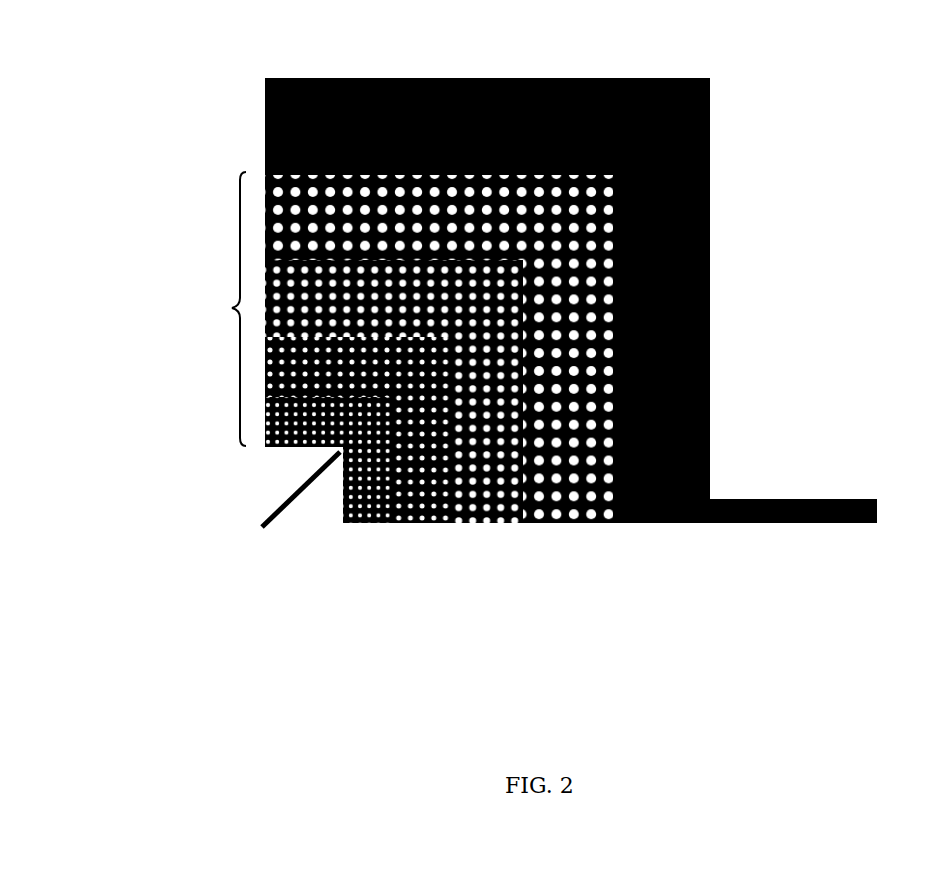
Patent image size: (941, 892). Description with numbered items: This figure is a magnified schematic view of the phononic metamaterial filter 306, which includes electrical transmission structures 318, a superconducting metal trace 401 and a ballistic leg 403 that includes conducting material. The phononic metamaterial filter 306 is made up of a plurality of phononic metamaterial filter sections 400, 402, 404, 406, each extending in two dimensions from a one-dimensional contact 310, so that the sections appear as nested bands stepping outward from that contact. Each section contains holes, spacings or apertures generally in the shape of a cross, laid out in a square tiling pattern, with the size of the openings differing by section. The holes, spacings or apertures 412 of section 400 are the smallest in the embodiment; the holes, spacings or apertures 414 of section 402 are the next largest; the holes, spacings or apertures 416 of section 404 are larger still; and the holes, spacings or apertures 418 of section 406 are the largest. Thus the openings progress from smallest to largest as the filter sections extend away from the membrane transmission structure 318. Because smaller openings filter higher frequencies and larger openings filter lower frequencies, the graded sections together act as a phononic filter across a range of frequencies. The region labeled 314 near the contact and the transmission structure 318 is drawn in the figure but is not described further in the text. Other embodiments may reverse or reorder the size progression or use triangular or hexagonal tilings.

The superconducting metal trace 401 is at (722, 172).
The ballistic leg 403 is at (740, 523).
The phononic metamaterial filter 306 is at (183, 309).
The phononic metamaterial filter section 400 is at (213, 412).
The phononic metamaterial filter section 402 is at (215, 363).
The phononic metamaterial filter section 404 is at (227, 288).
The phononic metamaterial filter section 406 is at (227, 225).
The holes, spacings or apertures 412 is at (369, 525).
The holes, spacings or apertures 414 is at (414, 525).
The holes, spacings or apertures 416 is at (489, 525).
The holes, spacings or apertures 418 is at (559, 525).
The one-dimensional contact 310 is at (338, 455).
The flow region 314 is at (262, 480).
The electrical transmission structures 318 is at (294, 490).